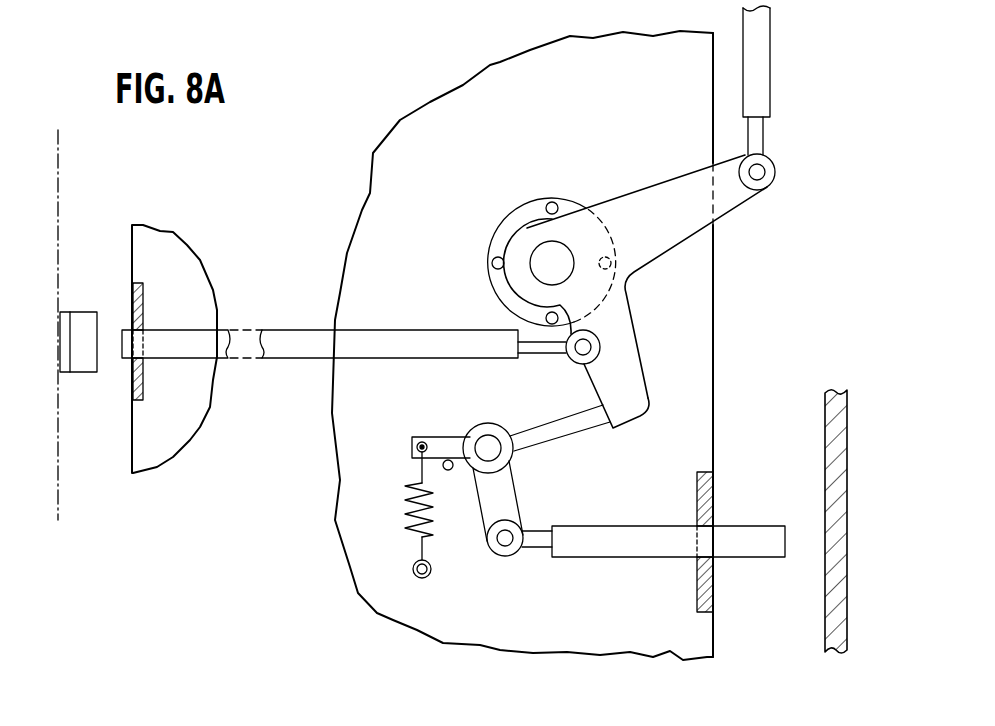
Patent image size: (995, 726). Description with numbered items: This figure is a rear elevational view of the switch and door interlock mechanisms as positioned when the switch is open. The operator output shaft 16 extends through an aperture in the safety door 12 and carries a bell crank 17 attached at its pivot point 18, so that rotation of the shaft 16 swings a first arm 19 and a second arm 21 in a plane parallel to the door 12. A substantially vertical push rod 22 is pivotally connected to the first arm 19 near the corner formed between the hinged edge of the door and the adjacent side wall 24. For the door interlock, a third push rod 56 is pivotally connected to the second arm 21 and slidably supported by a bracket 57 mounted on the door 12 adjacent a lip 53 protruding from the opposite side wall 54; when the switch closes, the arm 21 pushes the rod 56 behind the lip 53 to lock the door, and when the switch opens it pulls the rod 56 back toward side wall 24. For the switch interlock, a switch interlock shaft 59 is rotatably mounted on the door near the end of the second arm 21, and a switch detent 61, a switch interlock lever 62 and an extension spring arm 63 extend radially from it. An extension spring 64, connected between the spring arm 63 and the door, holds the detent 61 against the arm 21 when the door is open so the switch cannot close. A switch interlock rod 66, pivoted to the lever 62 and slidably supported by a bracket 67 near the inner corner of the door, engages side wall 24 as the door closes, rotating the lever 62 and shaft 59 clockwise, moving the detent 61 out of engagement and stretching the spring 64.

The safety door 12 is at (371, 196).
The operator output shaft 16 is at (544, 256).
The bell crank 17 is at (612, 203).
The pivot point 18 is at (530, 283).
The first arm 19 is at (675, 207).
The second arm 21 is at (623, 377).
The push rod 22 is at (764, 50).
The side wall 24 is at (832, 408).
The lip 53 is at (83, 323).
The side wall 54 is at (60, 228).
The third push rod 56 is at (172, 340).
The bracket 57 is at (143, 373).
The switch interlock shaft 59 is at (487, 440).
The switch detent 61 is at (563, 425).
The switch interlock lever 62 is at (503, 503).
The extension spring arm 63 is at (433, 435).
The extension spring 64 is at (403, 507).
The switch interlock rod 66 is at (633, 537).
The bracket 67 is at (698, 587).